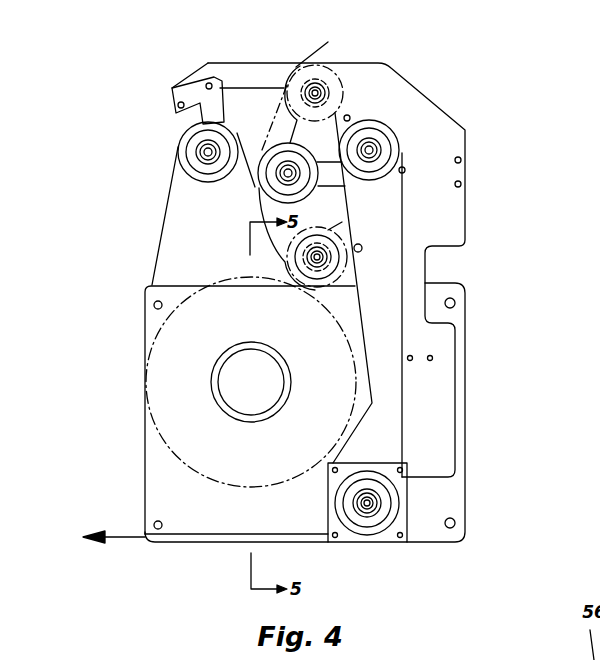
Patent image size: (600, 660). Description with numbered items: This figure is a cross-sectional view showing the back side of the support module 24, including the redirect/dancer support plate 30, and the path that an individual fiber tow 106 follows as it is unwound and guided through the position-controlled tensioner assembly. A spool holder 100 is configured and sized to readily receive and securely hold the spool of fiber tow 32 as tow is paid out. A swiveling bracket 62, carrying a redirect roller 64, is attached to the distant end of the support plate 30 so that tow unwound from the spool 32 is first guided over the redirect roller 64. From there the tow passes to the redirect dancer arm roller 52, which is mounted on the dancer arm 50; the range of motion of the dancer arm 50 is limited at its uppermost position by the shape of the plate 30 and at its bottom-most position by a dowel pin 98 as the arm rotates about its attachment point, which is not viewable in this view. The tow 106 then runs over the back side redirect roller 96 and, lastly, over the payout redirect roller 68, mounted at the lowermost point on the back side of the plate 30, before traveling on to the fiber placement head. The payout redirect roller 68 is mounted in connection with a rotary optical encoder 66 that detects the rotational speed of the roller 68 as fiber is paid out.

The support module 24 is at (465, 170).
The redirect/dancer support plate 30 is at (367, 292).
The spool of fiber tow 32 is at (167, 405).
The dancer arm 50 is at (322, 153).
The redirect dancer arm roller 52 is at (288, 143).
The swiveling bracket 62 is at (172, 88).
The redirect roller 64 is at (175, 165).
The rotary optical encoder 66 is at (382, 512).
The payout redirect roller 68 is at (367, 502).
The back side redirect roller 96 is at (399, 130).
The dowel pin 98 is at (362, 248).
The spool holder 100 is at (233, 373).
The fiber tow 106 is at (158, 243).